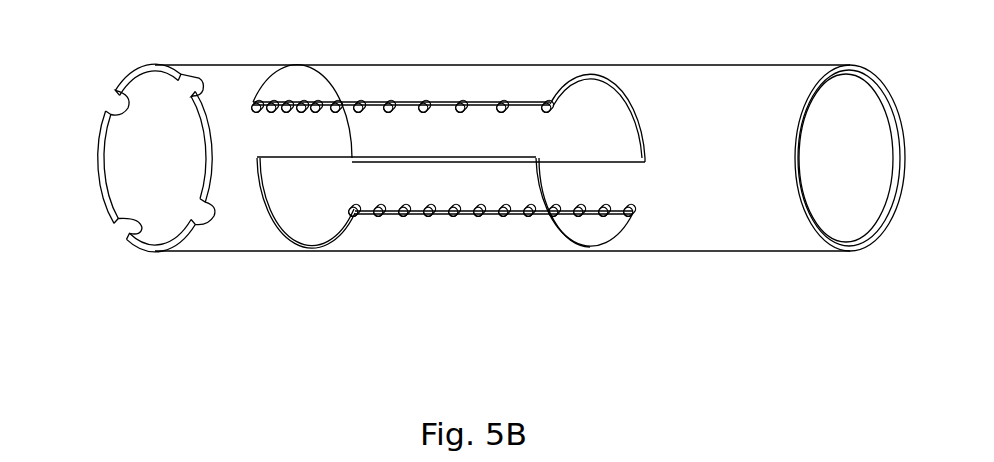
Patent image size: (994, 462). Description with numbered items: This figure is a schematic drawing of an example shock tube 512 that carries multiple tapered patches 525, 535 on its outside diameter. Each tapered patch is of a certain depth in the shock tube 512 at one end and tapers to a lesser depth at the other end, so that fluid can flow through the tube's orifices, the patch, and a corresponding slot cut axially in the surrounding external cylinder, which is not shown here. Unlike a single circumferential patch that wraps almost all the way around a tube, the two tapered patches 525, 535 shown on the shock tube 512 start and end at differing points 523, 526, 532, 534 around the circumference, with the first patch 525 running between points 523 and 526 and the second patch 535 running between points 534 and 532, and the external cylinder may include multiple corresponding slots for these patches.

The shock tube 512 is at (752, 222).
The starting point of tapered patch 523 is at (252, 102).
The tapered patch 525 is at (453, 88).
The ending point of tapered patch 526 is at (650, 158).
The starting point of tapered patch 534 is at (257, 157).
The tapered patch 535 is at (450, 233).
The ending point of tapered patch 532 is at (644, 214).